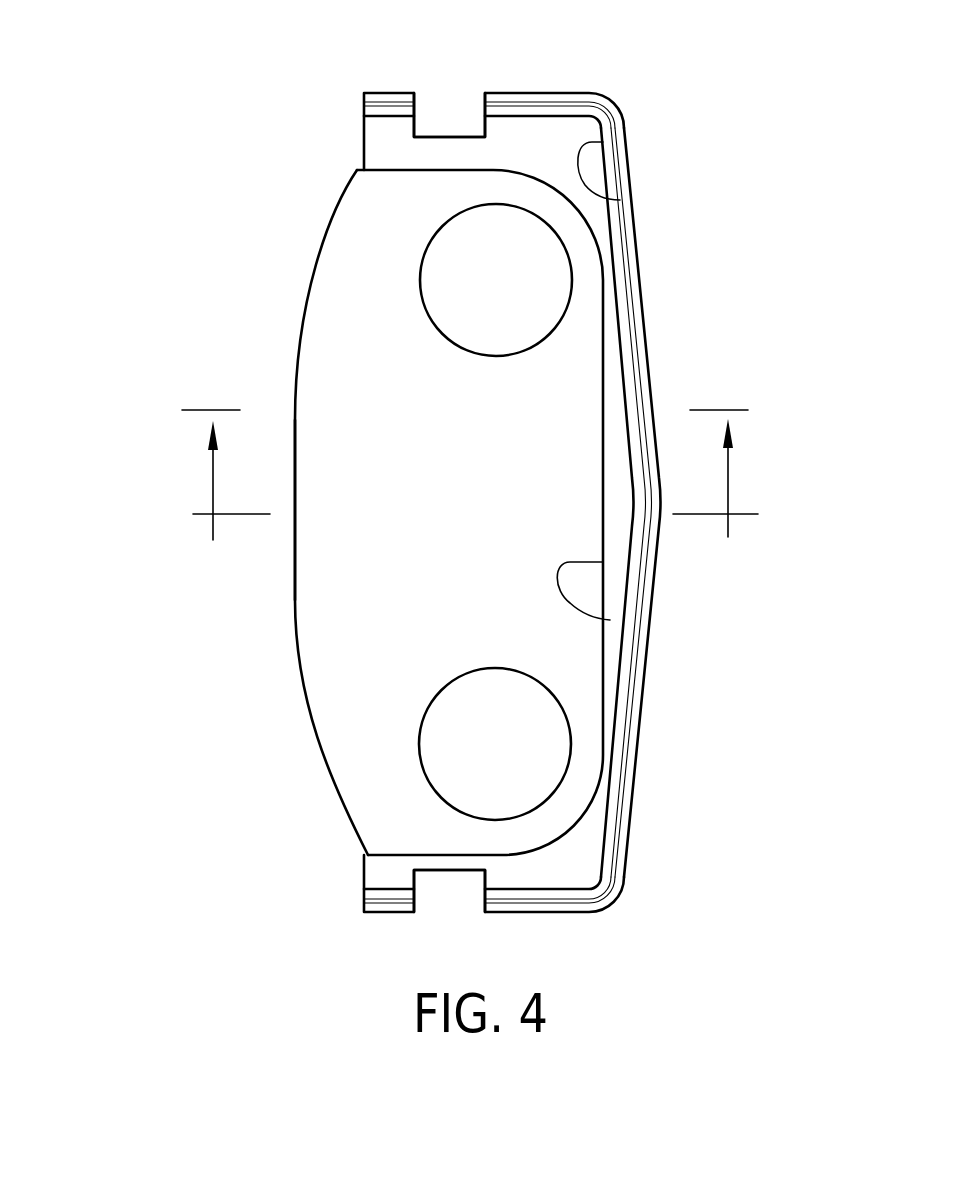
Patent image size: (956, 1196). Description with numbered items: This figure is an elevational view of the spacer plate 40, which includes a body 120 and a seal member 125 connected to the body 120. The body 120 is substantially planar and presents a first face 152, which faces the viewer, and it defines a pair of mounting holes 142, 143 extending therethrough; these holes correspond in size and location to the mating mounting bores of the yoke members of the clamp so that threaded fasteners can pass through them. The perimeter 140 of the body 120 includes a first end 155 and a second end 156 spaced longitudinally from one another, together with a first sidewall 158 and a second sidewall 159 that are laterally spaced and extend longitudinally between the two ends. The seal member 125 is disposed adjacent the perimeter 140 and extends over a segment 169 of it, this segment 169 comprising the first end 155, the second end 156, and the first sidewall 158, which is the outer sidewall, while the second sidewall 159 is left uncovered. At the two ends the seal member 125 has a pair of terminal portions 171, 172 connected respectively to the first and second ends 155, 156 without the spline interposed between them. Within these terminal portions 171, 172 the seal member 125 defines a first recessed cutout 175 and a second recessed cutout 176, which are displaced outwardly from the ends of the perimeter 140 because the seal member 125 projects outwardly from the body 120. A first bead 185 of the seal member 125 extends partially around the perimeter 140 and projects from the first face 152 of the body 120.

The spacer plate 40 is at (212, 117).
The body 120 is at (365, 600).
The seal member 125 is at (627, 670).
The perimeter 140 is at (295, 588).
The mounting hole 142 is at (420, 272).
The mounting hole 143 is at (420, 716).
The first face 152 is at (475, 482).
The first end 155 is at (455, 170).
The second end 156 is at (400, 853).
The first sidewall 158 is at (610, 620).
The second sidewall 159 is at (295, 552).
The segment 169 is at (423, 170).
The terminal portion 171 is at (378, 133).
The terminal portion 172 is at (417, 860).
The first recessed cutout 175 is at (427, 113).
The second recessed cutout 176 is at (420, 875).
The first bead 185 is at (620, 200).